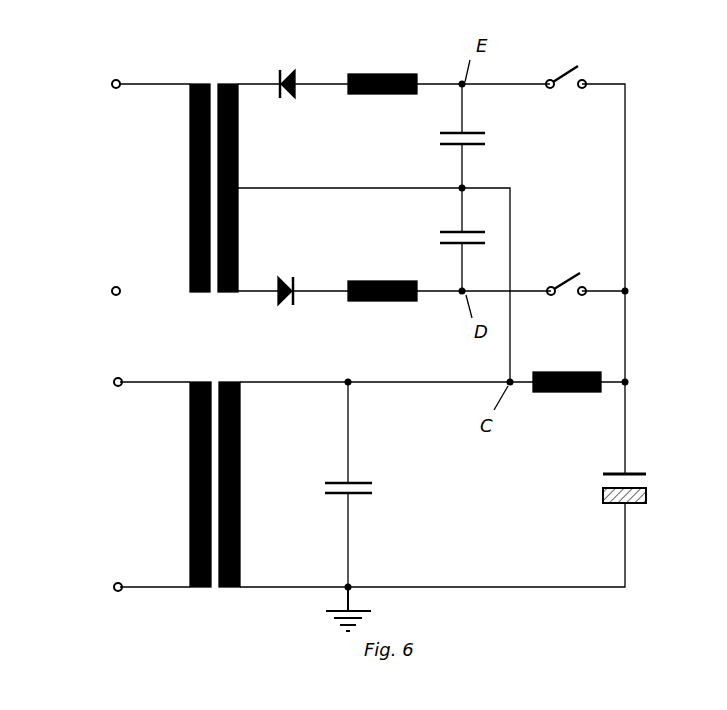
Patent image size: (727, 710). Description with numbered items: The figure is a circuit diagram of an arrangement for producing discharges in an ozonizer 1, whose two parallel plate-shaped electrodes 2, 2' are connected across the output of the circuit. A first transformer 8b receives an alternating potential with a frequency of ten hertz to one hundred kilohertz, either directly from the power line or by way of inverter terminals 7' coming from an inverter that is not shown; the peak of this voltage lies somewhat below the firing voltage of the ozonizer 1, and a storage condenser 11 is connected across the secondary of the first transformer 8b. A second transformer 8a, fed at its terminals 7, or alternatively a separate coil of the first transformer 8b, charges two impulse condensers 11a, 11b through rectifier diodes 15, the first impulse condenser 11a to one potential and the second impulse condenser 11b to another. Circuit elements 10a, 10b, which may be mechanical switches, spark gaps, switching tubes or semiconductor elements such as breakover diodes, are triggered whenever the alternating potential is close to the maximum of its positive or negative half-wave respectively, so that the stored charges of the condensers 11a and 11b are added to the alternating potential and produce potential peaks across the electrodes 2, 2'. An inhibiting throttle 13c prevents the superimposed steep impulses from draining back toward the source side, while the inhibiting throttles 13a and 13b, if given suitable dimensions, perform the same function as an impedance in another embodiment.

The ozonizer 1 is at (598, 488).
The electrode 2 is at (603, 456).
The electrode 2' is at (607, 515).
The terminals 7 is at (69, 187).
The inverter terminals 7' is at (70, 484).
The second transformer 8a is at (215, 82).
The first transformer 8b is at (212, 380).
The circuit element 10a is at (570, 68).
The circuit element 10b is at (566, 272).
The storage condenser 11 is at (364, 475).
The first impulse condenser 11a is at (438, 145).
The second impulse condenser 11b is at (438, 236).
The inhibiting throttle 13a is at (370, 93).
The inhibiting throttle 13b is at (383, 302).
The inhibiting throttle 13c is at (568, 392).
The rectifier diodes 15 is at (292, 68).